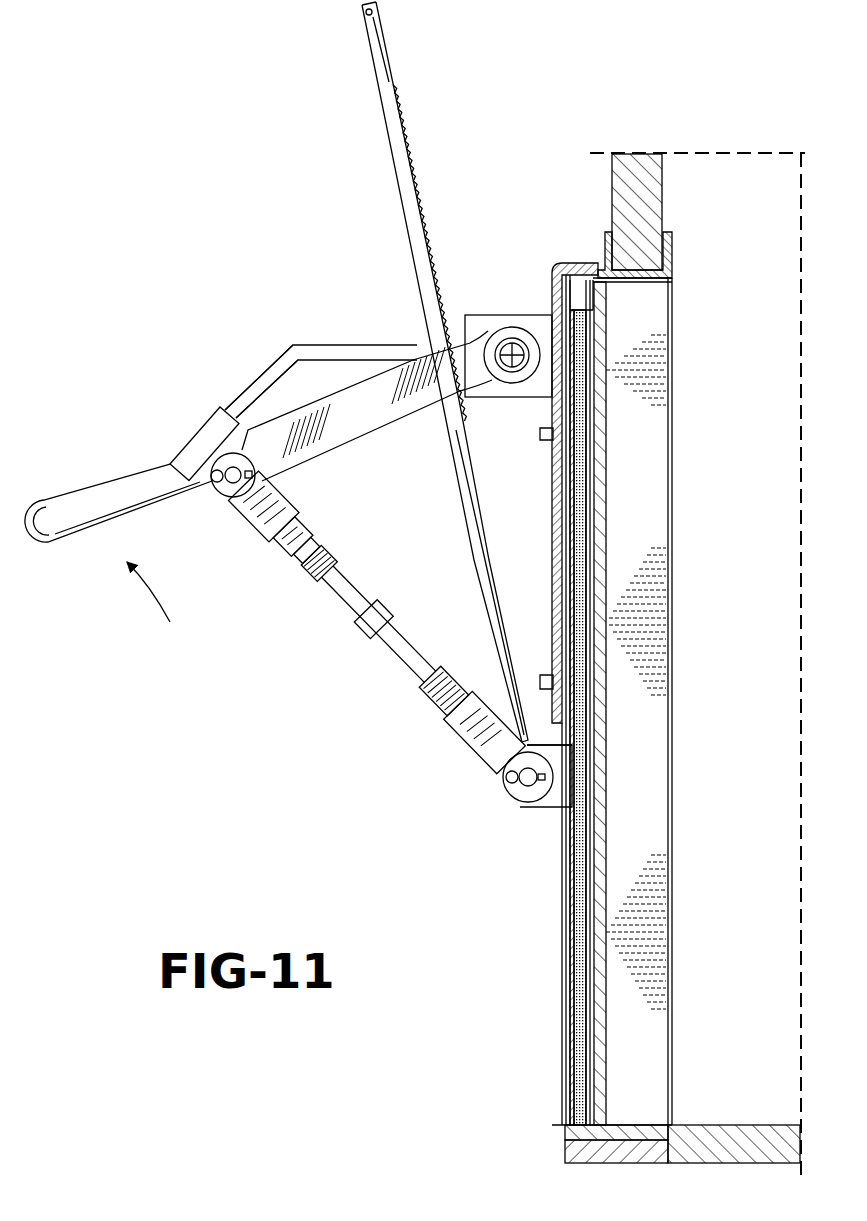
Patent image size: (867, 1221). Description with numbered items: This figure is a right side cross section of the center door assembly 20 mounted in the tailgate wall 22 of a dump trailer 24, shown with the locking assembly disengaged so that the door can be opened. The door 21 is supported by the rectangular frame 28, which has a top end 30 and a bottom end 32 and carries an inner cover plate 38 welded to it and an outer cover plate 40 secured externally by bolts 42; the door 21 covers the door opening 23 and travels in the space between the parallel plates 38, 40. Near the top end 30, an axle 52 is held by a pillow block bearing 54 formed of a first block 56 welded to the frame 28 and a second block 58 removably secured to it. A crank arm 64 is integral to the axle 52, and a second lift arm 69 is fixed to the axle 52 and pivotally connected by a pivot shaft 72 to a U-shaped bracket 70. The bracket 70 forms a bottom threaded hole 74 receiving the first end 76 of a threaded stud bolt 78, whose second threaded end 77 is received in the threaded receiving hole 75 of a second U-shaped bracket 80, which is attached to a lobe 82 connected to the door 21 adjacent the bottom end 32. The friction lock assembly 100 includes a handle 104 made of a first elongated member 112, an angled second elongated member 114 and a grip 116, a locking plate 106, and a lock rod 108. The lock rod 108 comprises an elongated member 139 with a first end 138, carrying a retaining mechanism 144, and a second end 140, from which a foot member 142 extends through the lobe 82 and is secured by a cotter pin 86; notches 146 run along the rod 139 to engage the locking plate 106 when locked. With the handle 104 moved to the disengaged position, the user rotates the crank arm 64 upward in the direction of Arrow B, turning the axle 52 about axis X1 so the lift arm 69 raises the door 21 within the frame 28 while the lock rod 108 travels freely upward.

The door assembly 20 is at (263, 354).
The door 21 is at (596, 600).
The tailgate wall 22 is at (618, 172).
The door opening 23 is at (612, 895).
The dump trailer 24 is at (740, 150).
The frame 28 is at (676, 250).
The top end 30 is at (580, 245).
The bottom end 32 is at (545, 1140).
The inner cover plate 38 is at (612, 550).
The outer cover plate 40 is at (555, 465).
The bolts 42 is at (545, 435).
The axle 52 is at (569, 360).
The pillow block bearing 54 is at (547, 481).
The first block 56 is at (556, 302).
The second block 58 is at (480, 318).
The crank arm 64 is at (98, 496).
The second lift arm 69 is at (372, 402).
The U-shaped bracket 70 is at (290, 503).
The pivot shaft 72 is at (240, 493).
The bottom threaded hole 74 is at (305, 563).
The threaded receiving hole 75 is at (445, 720).
The first end 76 is at (320, 560).
The second threaded end 77 is at (438, 700).
The threaded stud bolt 78 is at (365, 625).
The second U-shaped bracket 80 is at (476, 757).
The lobe 82 is at (508, 800).
The cotter pin 86 is at (508, 782).
The friction lock assembly 100 is at (367, 375).
The handle 104 is at (267, 395).
The locking plate 106 is at (367, 393).
The lock rod 108 is at (378, 372).
The first elongated member 112 is at (327, 343).
The second elongated member 114 is at (250, 392).
The grip 116 is at (205, 440).
The first end 138 is at (378, 372).
The elongated member 139 is at (378, 372).
The second end 140 is at (535, 738).
The foot member 142 is at (532, 790).
The retaining mechanism 144 is at (360, 14).
The notches 146 is at (449, 253).
The axis X1 is at (522, 352).
The Arrow B is at (145, 592).